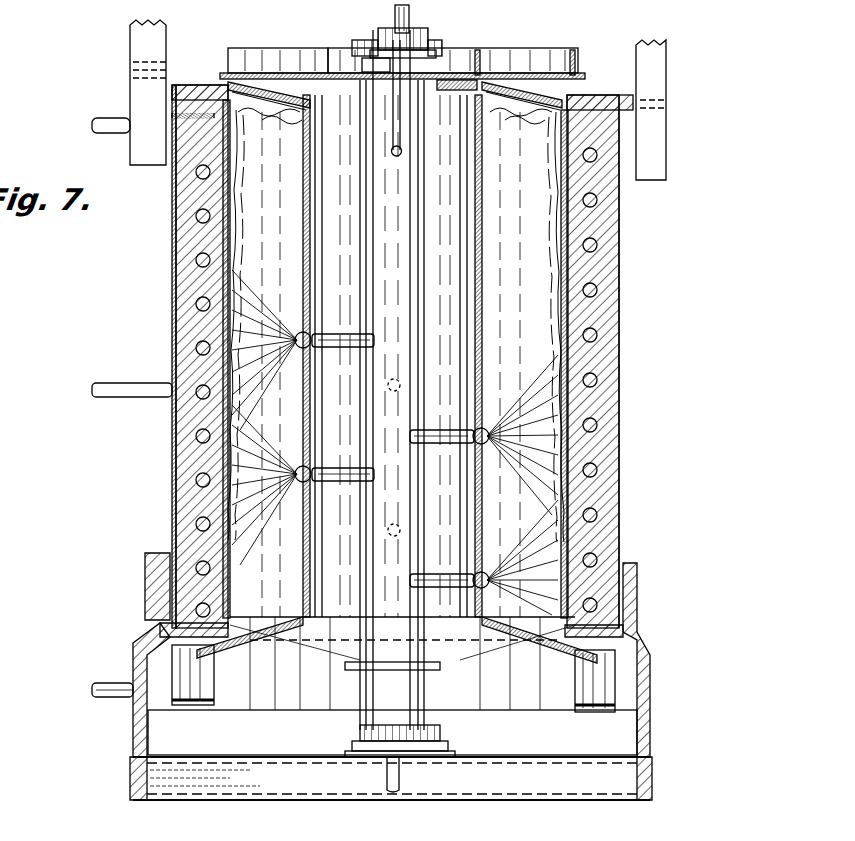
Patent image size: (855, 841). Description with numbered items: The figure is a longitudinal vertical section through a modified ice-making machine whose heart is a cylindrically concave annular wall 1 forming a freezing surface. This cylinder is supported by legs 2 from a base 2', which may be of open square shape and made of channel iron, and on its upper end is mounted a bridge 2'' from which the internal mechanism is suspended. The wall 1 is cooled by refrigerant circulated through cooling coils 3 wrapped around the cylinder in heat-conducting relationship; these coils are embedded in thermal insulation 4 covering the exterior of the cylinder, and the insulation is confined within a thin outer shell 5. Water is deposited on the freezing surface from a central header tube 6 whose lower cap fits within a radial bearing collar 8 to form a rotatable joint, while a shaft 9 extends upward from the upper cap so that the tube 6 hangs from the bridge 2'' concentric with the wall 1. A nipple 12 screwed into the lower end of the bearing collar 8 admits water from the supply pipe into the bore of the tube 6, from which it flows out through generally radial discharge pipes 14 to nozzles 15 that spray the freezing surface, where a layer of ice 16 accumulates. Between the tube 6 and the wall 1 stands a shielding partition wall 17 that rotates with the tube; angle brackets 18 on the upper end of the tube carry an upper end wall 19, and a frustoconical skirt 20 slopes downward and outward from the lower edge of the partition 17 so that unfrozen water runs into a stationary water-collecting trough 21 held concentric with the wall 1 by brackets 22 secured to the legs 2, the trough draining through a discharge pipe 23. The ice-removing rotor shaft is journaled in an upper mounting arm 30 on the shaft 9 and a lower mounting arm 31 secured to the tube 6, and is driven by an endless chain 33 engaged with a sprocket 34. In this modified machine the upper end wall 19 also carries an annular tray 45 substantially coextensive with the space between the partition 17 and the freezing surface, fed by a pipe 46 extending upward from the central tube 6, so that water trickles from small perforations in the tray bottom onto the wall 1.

The cylindrically concave annular wall 1 is at (578, 322).
The legs 2 is at (392, 655).
The base 2' is at (412, 778).
The bridge 2'' is at (402, 100).
The cooling coils 3 is at (598, 428).
The thermal insulation 4 is at (598, 375).
The outer shell 5 is at (620, 465).
The central header tube 6 is at (400, 236).
The radial bearing collar 8 is at (360, 733).
The shaft 9 is at (410, 14).
The nipple 12 is at (400, 778).
The discharge pipes 14 is at (362, 346).
The nozzles 15 is at (300, 348).
The layer of ice 16 is at (565, 266).
The shielding partition wall 17 is at (318, 196).
The angle brackets 18 is at (455, 92).
The upper end wall 19 is at (522, 122).
The frustoconical skirt 20 is at (292, 626).
The water-collecting trough 21 is at (206, 690).
The brackets 22 is at (150, 722).
The discharge pipe 23 is at (110, 684).
The upper mounting arm 30 is at (440, 62).
The lower mounting arm 31 is at (441, 668).
The endless chain 33 is at (360, 44).
The sprocket 34 is at (428, 40).
The annular tray 45 is at (228, 62).
The pipe 46 is at (392, 112).